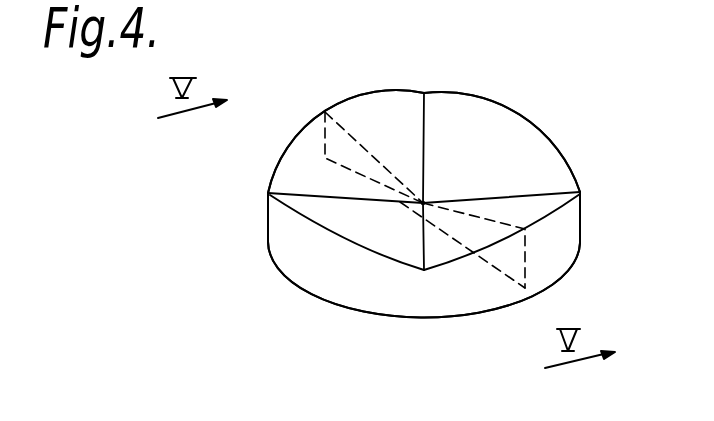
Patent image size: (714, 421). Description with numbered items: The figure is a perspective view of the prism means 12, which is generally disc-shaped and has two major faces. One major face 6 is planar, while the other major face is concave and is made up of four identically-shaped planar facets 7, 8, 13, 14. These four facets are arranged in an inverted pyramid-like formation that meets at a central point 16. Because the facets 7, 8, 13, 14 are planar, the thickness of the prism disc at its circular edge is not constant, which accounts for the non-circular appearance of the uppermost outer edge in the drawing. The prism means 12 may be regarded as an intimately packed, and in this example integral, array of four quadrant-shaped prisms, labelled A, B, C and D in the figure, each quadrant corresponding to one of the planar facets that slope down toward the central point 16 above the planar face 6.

The prism means 12 is at (317, 75).
The planar facet 7 is at (378, 102).
The planar facet 14 is at (460, 102).
The central point 16 is at (423, 203).
The planar facet 13 is at (300, 207).
The planar facet 8 is at (565, 199).
The planar major face 6 is at (422, 317).